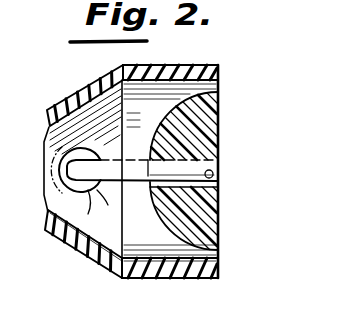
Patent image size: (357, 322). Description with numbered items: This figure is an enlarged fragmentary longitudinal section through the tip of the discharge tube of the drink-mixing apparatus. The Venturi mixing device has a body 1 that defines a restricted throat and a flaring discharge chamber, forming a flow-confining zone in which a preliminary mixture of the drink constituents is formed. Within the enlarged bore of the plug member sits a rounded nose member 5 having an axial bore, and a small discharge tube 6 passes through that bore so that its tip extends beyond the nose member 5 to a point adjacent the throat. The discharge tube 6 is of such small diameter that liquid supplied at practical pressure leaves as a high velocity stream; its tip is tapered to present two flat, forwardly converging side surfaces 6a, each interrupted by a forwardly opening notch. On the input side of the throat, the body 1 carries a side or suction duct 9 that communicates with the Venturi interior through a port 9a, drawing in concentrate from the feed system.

The body 1 is at (188, 62).
The rounded nose member 5 is at (164, 113).
The discharge tube 6 is at (138, 192).
The side surfaces 6a is at (102, 144).
The suction duct 9 is at (64, 170).
The port 9a is at (45, 150).